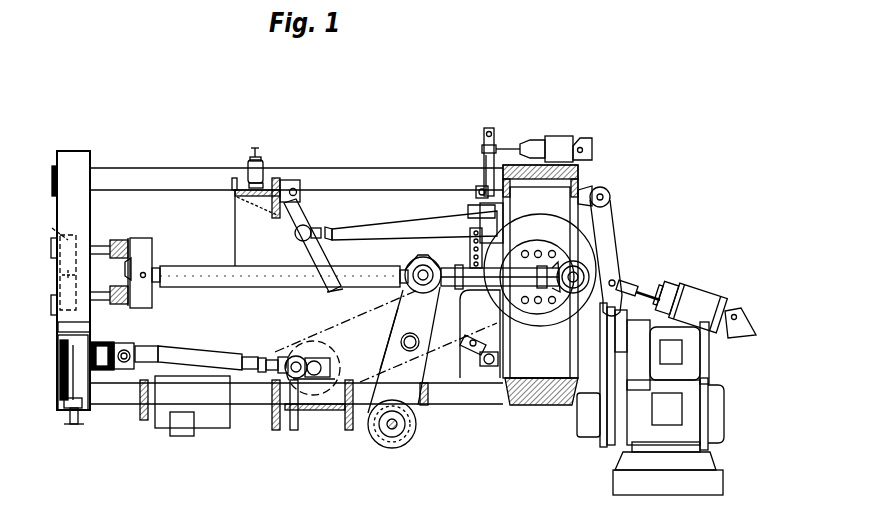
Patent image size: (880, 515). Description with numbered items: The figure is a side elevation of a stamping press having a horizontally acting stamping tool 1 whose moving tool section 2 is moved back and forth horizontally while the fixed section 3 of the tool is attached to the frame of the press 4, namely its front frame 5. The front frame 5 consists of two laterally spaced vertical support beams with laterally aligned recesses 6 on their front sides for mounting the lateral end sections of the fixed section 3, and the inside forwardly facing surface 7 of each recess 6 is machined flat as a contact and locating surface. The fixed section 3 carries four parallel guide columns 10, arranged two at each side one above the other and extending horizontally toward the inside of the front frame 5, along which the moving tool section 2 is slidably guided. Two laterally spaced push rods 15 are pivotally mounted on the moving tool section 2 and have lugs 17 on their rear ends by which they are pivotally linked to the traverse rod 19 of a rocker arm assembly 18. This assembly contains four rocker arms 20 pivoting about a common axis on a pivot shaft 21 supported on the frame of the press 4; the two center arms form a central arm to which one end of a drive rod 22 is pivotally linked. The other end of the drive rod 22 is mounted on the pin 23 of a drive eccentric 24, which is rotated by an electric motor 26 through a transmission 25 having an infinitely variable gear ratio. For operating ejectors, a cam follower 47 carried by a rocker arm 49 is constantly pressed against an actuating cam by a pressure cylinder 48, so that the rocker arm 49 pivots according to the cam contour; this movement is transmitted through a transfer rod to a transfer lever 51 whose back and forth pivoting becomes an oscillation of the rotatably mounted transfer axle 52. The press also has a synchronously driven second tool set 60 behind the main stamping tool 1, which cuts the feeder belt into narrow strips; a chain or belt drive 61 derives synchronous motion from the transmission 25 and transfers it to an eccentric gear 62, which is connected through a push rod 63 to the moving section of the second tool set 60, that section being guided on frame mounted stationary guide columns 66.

The stamping tool 1 is at (124, 238).
The moving tool section 2 is at (153, 256).
The fixed section of the tool 3 is at (62, 274).
The frame of the press 4 is at (166, 166).
The front frame 5 is at (74, 152).
The recesses 6 is at (64, 328).
The inside forwardly facing surface 7 is at (66, 235).
The guide columns 10 is at (100, 290).
The push rods 15 is at (193, 276).
The lugs 17 is at (410, 262).
The rocker arm assembly 18 is at (384, 350).
The traverse rod 19 is at (423, 270).
The rocker arms 20 is at (411, 398).
The pivot shaft 21 is at (388, 428).
The drive rod 22 is at (472, 271).
The pin 23 is at (572, 292).
The drive eccentric 24 is at (540, 262).
The transmission 25 is at (582, 245).
The electric motor 26 is at (700, 402).
The cam follower 47 is at (604, 190).
The pressure cylinder 48 is at (697, 300).
The rocker arm 49 is at (607, 252).
The transfer lever 51 is at (303, 213).
The transfer axle 52 is at (298, 188).
The second tool set 60 is at (118, 343).
The chain or belt drive 61 is at (334, 328).
The eccentric gear 62 is at (296, 360).
The push rod 63 is at (216, 356).
The guide columns 66 is at (180, 350).